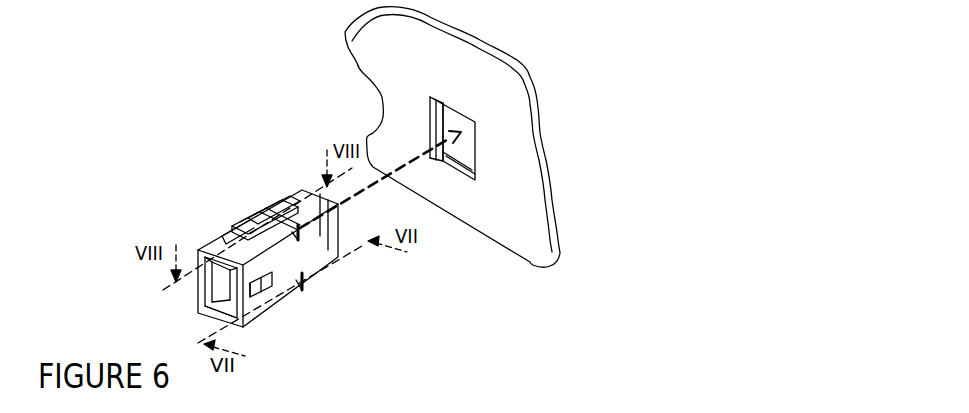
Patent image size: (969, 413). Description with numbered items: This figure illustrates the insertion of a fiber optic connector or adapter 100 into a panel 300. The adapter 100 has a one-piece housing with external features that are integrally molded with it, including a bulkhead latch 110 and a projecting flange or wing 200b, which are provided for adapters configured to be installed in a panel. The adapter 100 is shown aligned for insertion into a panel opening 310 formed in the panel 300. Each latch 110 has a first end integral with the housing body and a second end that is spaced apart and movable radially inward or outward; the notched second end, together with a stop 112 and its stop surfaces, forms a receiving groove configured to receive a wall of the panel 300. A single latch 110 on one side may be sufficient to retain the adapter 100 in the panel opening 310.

The fiber optic connector or adapter 100 is at (222, 158).
The bulkhead latch 110 is at (281, 212).
The stop 112 is at (252, 215).
The wing 200b is at (298, 232).
The panel 300 is at (502, 80).
The panel opening 310 is at (473, 158).